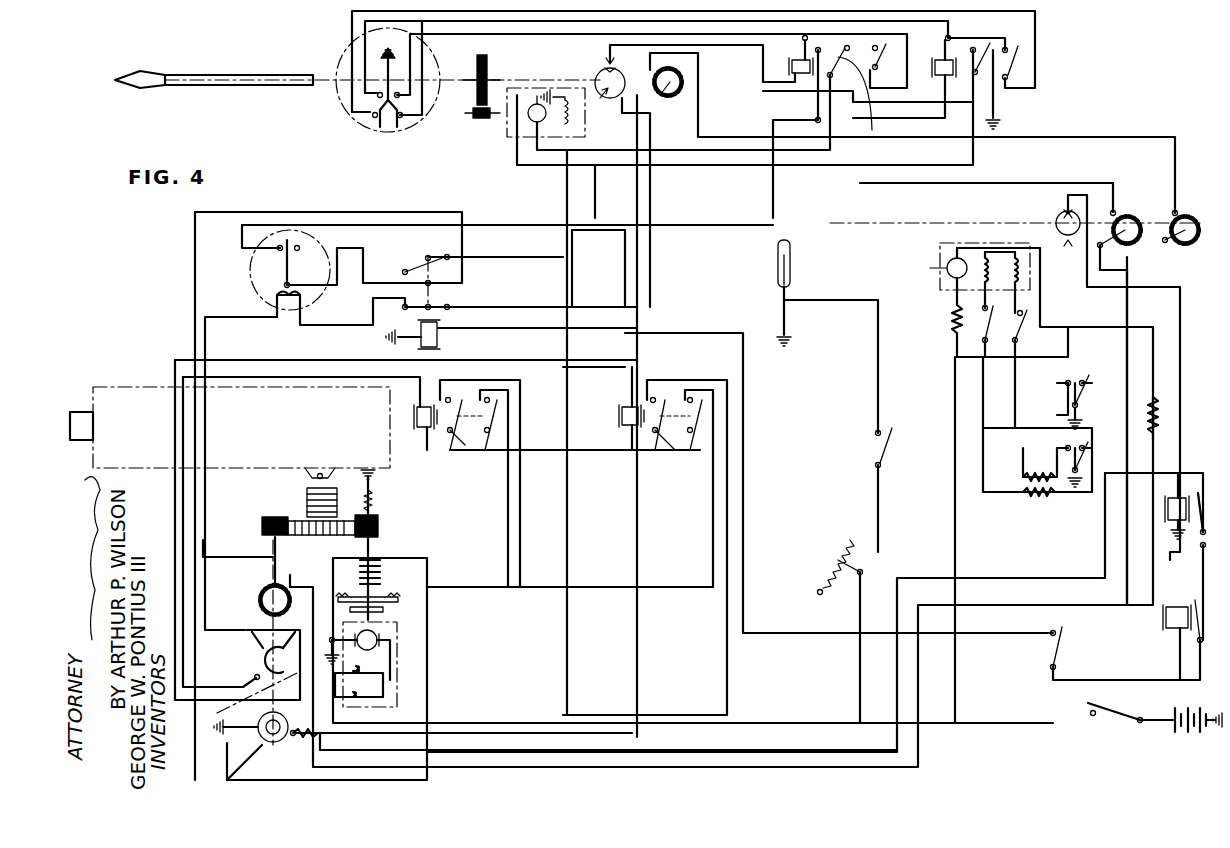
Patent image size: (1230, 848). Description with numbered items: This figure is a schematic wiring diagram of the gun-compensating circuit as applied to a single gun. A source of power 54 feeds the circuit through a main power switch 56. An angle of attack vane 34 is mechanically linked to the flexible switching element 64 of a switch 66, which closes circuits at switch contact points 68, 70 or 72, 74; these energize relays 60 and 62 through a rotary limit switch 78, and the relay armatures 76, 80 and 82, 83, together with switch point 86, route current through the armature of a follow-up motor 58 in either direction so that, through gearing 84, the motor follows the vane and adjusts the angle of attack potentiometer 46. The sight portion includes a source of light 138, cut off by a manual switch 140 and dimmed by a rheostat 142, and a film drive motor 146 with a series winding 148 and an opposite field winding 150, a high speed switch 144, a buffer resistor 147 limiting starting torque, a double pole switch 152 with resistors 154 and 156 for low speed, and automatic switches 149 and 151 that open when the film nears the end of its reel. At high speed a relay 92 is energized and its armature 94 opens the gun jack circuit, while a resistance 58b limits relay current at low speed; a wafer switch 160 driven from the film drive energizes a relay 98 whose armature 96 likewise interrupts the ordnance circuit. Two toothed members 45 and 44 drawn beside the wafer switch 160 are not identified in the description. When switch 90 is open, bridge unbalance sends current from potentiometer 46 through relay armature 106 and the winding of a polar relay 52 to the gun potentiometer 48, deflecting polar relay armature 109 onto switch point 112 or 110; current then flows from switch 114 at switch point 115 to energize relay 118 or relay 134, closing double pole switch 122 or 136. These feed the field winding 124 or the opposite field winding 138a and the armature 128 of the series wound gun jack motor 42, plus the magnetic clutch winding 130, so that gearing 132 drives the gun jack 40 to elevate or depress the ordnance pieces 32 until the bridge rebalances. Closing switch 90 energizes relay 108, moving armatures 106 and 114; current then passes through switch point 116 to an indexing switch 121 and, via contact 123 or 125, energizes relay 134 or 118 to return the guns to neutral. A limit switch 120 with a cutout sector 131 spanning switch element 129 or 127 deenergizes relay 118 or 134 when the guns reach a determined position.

The angle of attack vane 34 is at (180, 60).
The flexible switching element 64 is at (395, 120).
The switch 66 is at (395, 90).
The switch contact point 68 is at (400, 96).
The switch contact point 70 is at (403, 118).
The switch contact point 72 is at (370, 108).
The switch contact point 74 is at (372, 118).
The gearing 84 is at (475, 118).
The follow-up motor 58 is at (512, 140).
The rotary limit switch 78 is at (595, 70).
The angle of attack potentiometer 46 is at (675, 80).
The relay 60 is at (798, 62).
The relay armature 76 is at (891, 64).
The relay armature 80 is at (815, 85).
The switch point 86 is at (870, 98).
The relay 62 is at (945, 52).
The relay armature 82 is at (987, 45).
The relay armature 83 is at (1022, 58).
The wafer switch 160 is at (1058, 200).
The gear 45 is at (1150, 195).
The gear 44 is at (1208, 195).
The polar relay 52 is at (238, 262).
The switch point 110 is at (300, 248).
The switch point 112 is at (285, 265).
The polar relay armature 109 is at (272, 288).
The switch point 116 is at (403, 273).
The switch 114 is at (415, 262).
The switch point 115 is at (408, 262).
The relay armature 106 is at (438, 305).
The relay 108 is at (440, 338).
The source of light 138 is at (775, 268).
The series winding 148 is at (975, 250).
The field winding 150 is at (1012, 250).
The film drive motor 146 is at (943, 290).
The buffer resistor 147 is at (952, 333).
The switch 149 is at (985, 325).
The switch 151 is at (1020, 330).
The high speed switch 144 is at (1080, 372).
The ordnance pieces 32 is at (118, 390).
The relay 134 is at (418, 432).
The relay 118 is at (620, 428).
The double pole switch 136 is at (487, 440).
The double pole switch 122 is at (700, 435).
The manual switch 140 is at (885, 448).
The rheostat 142 is at (848, 545).
The resistor 156 is at (1038, 460).
The resistor 154 is at (1040, 498).
The double pole switch 152 is at (1083, 468).
The resistance 58b is at (1150, 425).
The relay 98 is at (1170, 505).
The relay armature 96 is at (1203, 502).
The gun jack 40 is at (296, 501).
The gearing 132 is at (265, 520).
The winding 130 is at (372, 565).
The gun potentiometer 48 is at (258, 598).
The indexing switch 121 is at (262, 662).
The contact 123 is at (255, 677).
The armature 128 is at (398, 635).
The winding 124 is at (392, 660).
The machine gun jack motor 42 is at (408, 686).
The field winding 138a is at (398, 697).
The contact 125 is at (217, 713).
The cutout sector 131 is at (265, 716).
The limit switch 120 is at (253, 740).
The switch element 127 is at (240, 762).
The switch element 129 is at (305, 745).
The relay 92 is at (1168, 615).
The relay armature 94 is at (1200, 612).
The switch 90 is at (1058, 652).
The main power switch 56 is at (1110, 705).
The source of power 54 is at (1182, 735).